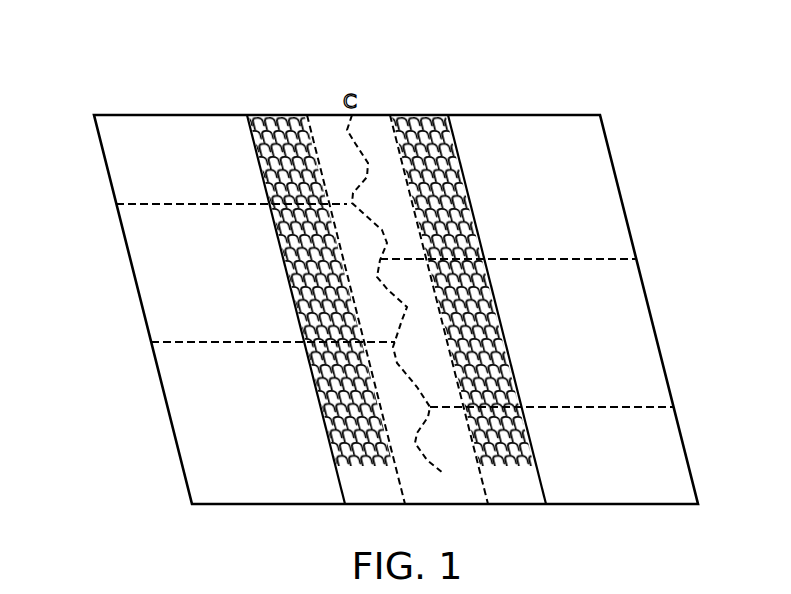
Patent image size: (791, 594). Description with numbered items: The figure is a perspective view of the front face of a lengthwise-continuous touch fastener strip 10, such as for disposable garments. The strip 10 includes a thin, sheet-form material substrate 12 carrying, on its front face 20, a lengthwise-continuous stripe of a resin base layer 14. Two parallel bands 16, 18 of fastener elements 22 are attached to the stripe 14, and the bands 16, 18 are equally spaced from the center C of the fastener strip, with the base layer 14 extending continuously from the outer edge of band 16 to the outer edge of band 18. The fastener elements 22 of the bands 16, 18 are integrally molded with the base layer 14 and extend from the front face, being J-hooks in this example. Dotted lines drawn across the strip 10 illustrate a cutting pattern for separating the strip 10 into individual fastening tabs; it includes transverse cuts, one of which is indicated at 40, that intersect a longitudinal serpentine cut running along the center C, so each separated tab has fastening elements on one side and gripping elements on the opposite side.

The touch fastener strip 10 is at (590, 114).
The material substrate 12 is at (583, 173).
The resin base layer 14 is at (438, 68).
The band of fastener elements 16 is at (275, 117).
The band of fastener elements 18 is at (462, 289).
The front face 20 is at (133, 165).
The fastener elements 22 is at (455, 202).
The fold line 40 is at (537, 243).